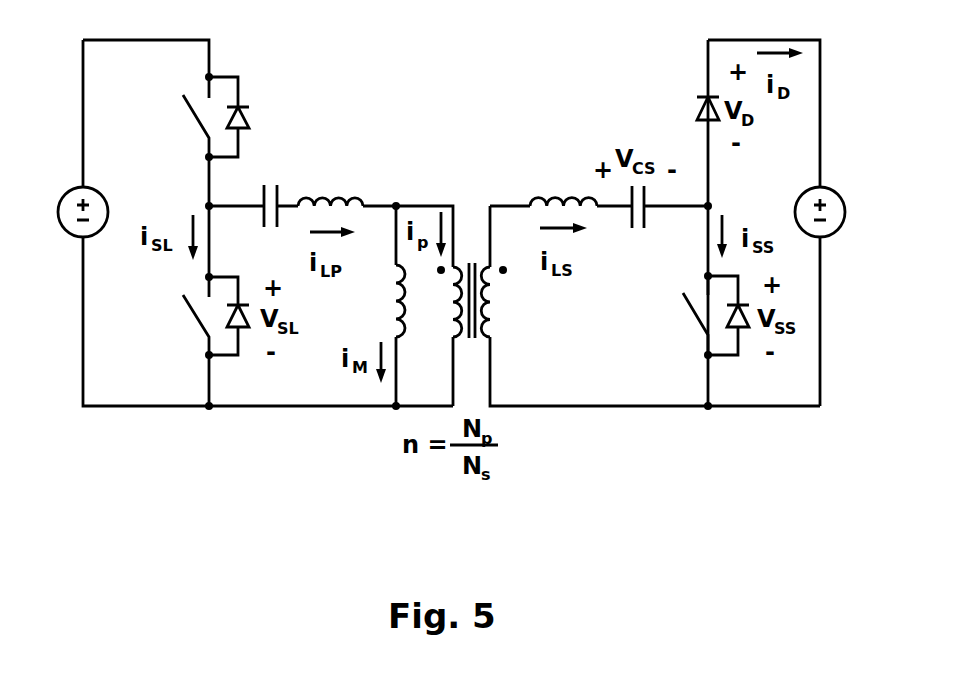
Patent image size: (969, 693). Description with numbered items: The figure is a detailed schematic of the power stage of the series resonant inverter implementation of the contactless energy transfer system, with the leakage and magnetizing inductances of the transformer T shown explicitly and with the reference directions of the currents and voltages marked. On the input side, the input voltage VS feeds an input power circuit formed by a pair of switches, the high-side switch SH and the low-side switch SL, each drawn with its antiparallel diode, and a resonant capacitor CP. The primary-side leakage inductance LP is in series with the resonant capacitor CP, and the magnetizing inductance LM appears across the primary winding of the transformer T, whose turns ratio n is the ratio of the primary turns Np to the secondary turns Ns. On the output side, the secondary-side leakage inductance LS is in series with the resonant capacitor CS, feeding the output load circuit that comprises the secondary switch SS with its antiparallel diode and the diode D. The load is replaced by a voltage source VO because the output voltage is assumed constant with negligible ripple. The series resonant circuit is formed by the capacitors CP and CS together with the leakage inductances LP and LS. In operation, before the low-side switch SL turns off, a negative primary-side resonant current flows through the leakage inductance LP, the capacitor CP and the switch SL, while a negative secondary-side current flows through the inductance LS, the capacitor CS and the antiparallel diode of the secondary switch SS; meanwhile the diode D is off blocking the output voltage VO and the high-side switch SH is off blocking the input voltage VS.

The input voltage VS is at (67, 212).
The high-side switch SH is at (192, 117).
The low-side switch SL is at (193, 306).
The resonant capacitor CP is at (270, 191).
The leakage inductance LP is at (330, 182).
The magnetizing inductance LM is at (377, 306).
The transformer T is at (470, 257).
The primary turns Np is at (437, 301).
The secondary turns Ns is at (504, 301).
The leakage inductance LS is at (563, 182).
The resonant capacitor CS is at (632, 230).
The diode D is at (692, 111).
The secondary switch SS is at (694, 306).
The output voltage VO is at (838, 212).